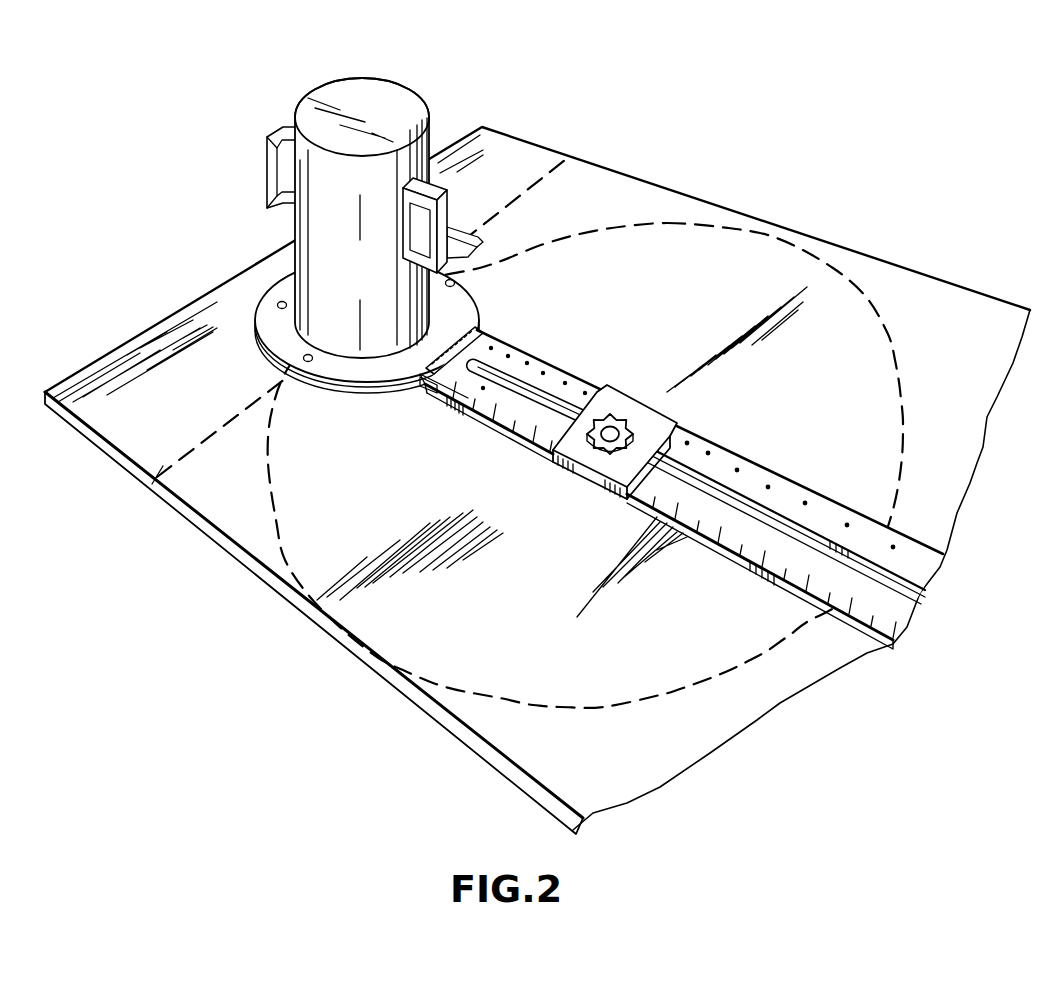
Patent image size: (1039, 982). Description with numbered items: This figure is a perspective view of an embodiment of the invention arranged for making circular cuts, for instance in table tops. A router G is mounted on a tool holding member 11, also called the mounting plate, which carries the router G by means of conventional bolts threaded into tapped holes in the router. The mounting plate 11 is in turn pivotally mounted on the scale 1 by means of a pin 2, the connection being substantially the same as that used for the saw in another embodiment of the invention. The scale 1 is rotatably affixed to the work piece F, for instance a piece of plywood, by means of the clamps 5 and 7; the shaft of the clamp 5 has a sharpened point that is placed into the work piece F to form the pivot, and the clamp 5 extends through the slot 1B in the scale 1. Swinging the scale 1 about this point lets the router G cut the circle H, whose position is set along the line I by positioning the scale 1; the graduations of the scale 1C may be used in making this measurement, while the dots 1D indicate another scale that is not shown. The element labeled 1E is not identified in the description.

The router G is at (397, 77).
The work piece F is at (217, 533).
The circle H is at (270, 502).
The line I is at (237, 418).
The tool holding member 11 is at (367, 393).
The scale 1 is at (712, 550).
The slot 1B is at (783, 517).
The scale 1C is at (492, 417).
The dots 1D is at (705, 448).
The index holes 1E is at (520, 360).
The pin 2 is at (478, 330).
The clamp 5 is at (617, 403).
The clamp 7 is at (573, 478).